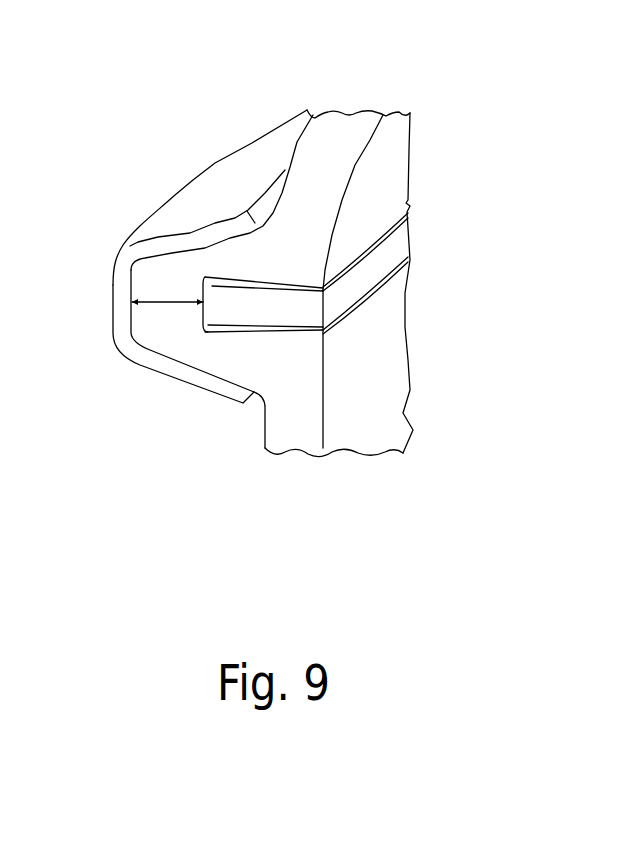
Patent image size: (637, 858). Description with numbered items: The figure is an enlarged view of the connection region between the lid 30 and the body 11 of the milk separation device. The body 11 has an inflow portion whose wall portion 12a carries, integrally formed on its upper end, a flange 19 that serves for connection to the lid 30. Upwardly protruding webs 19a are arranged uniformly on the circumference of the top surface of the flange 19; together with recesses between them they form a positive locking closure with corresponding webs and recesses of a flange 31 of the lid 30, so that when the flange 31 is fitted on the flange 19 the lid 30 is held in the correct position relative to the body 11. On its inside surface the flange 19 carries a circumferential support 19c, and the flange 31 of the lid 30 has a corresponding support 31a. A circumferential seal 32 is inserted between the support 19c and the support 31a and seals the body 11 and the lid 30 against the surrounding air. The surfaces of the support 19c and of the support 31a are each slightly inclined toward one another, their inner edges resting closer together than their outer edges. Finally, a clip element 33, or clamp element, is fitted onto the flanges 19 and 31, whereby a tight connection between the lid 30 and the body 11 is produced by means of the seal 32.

The body 11 is at (413, 373).
The wall portion 12a is at (272, 428).
The flange 19 is at (131, 322).
The web 19a is at (170, 322).
The circumferential support 19c is at (247, 332).
The lid 30 is at (335, 143).
The flange of the lid 31 is at (170, 275).
The support of the lid flange 31a is at (267, 282).
The circumferential seal 32 is at (390, 248).
The clip element 33 is at (248, 142).